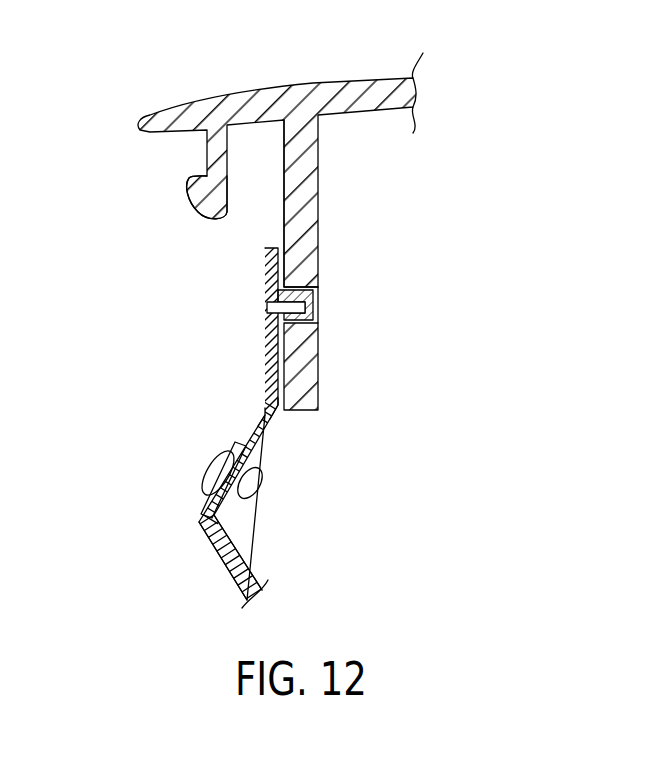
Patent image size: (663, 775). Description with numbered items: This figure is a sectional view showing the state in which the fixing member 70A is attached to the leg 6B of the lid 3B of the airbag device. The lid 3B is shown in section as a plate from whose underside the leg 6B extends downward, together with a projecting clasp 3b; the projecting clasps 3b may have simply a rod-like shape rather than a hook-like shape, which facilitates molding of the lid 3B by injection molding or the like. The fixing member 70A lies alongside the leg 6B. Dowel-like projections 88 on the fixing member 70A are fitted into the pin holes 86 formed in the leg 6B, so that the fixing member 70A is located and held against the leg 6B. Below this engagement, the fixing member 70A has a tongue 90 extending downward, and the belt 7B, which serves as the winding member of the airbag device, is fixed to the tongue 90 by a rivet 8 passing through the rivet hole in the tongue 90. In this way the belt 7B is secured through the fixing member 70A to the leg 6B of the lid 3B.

The lid 3B is at (354, 84).
The projecting clasps 3b is at (186, 181).
The leg 6B is at (318, 198).
The fixing member 70A is at (248, 284).
The dowel-like projections 88 is at (314, 300).
The pin holes 86 is at (315, 322).
The tongues 90 is at (259, 425).
The rivets 8 is at (210, 472).
The belt 7B is at (220, 563).